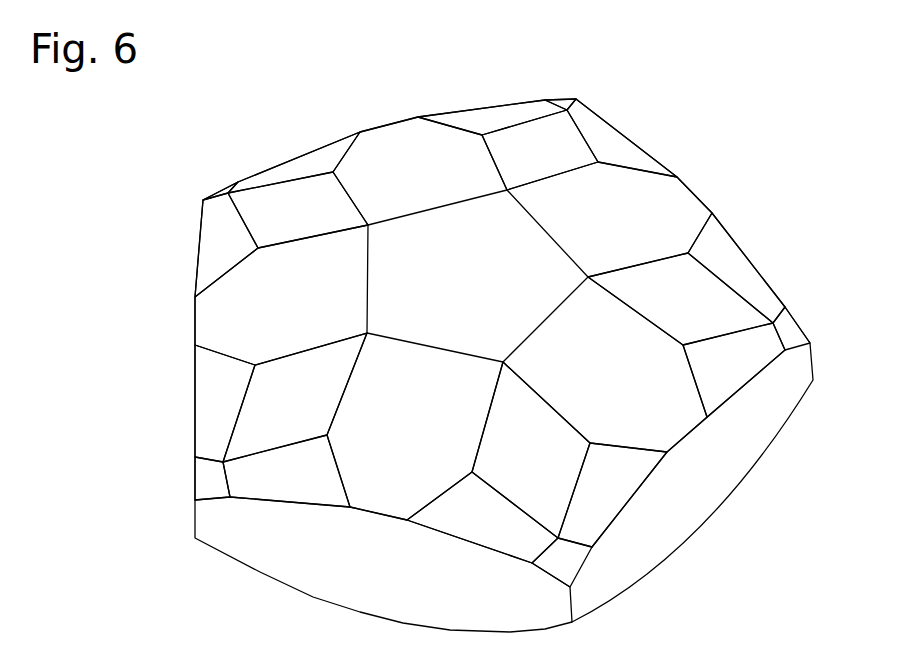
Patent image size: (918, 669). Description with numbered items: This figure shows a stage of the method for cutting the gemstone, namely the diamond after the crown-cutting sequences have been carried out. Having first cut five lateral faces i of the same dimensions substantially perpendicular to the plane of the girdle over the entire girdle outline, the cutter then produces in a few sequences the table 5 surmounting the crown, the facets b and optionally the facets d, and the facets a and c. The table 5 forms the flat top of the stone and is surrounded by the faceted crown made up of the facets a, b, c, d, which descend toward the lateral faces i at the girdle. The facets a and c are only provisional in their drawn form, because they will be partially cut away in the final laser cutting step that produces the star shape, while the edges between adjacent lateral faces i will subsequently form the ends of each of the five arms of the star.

The table 5 is at (504, 365).
The lateral face i is at (490, 486).
The facet a is at (453, 318).
The facet b is at (498, 324).
The facet c is at (490, 331).
The facet d is at (502, 337).